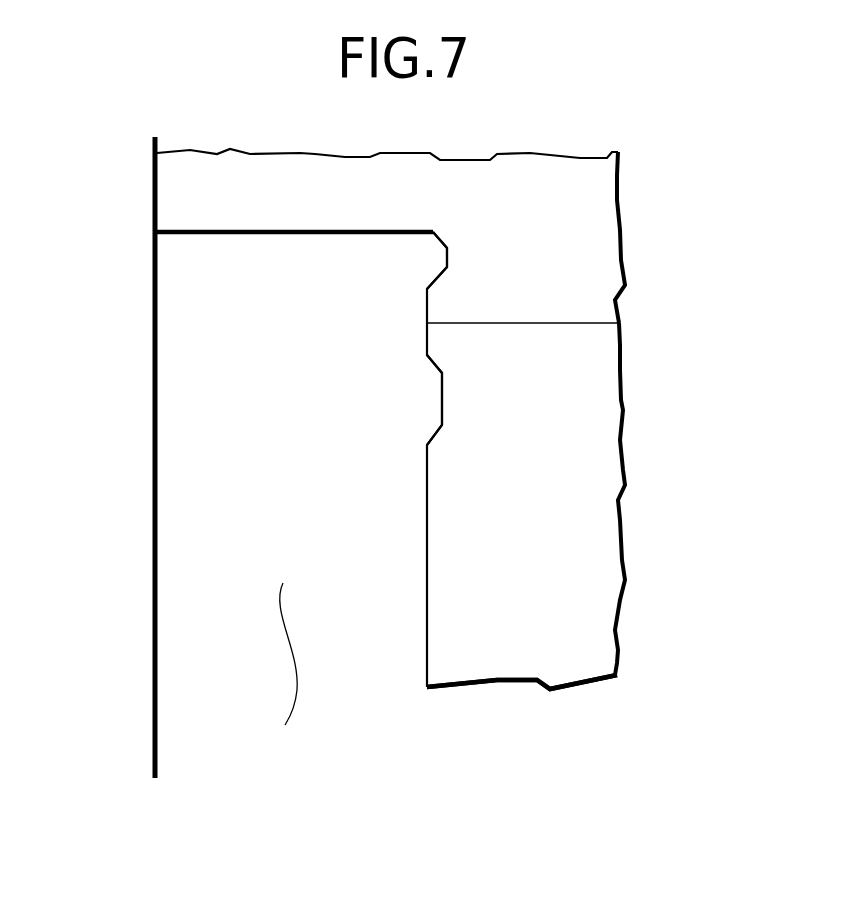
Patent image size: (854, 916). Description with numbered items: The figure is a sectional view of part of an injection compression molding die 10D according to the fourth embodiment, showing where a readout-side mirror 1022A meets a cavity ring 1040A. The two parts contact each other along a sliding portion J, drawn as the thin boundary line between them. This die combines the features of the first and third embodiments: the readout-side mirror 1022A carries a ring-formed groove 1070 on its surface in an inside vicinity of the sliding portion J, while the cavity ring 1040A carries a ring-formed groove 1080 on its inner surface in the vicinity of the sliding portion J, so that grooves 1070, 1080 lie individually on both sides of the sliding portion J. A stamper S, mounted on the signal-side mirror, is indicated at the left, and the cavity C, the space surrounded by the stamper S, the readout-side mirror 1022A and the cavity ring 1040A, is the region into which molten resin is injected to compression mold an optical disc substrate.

The injection compression molding die 10D is at (426, 758).
The cavity ring 1040A is at (610, 248).
The readout-side mirror 1022A is at (610, 495).
The ring-formed groove 1080 is at (432, 252).
The ring-formed groove 1070 is at (427, 399).
The sliding portion J is at (437, 319).
The stamper S is at (142, 454).
The cavity C is at (287, 674).